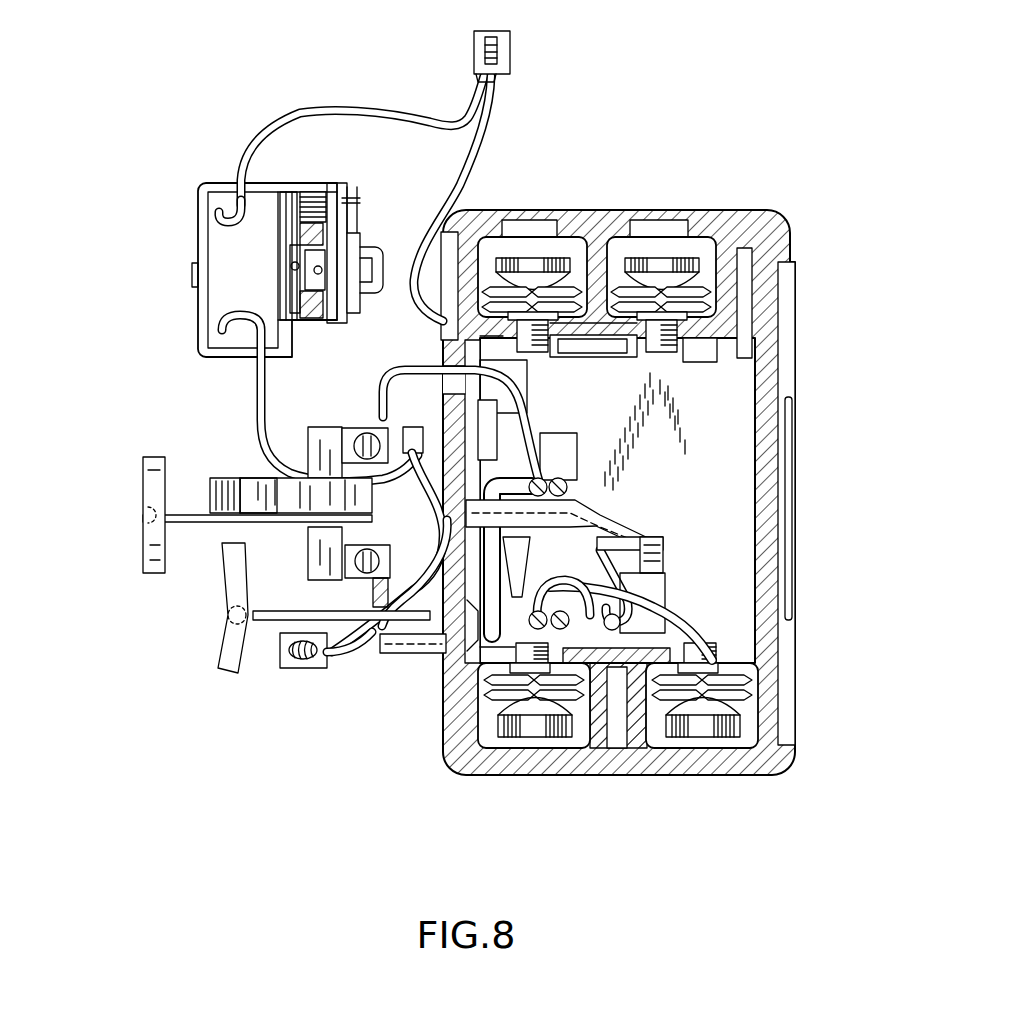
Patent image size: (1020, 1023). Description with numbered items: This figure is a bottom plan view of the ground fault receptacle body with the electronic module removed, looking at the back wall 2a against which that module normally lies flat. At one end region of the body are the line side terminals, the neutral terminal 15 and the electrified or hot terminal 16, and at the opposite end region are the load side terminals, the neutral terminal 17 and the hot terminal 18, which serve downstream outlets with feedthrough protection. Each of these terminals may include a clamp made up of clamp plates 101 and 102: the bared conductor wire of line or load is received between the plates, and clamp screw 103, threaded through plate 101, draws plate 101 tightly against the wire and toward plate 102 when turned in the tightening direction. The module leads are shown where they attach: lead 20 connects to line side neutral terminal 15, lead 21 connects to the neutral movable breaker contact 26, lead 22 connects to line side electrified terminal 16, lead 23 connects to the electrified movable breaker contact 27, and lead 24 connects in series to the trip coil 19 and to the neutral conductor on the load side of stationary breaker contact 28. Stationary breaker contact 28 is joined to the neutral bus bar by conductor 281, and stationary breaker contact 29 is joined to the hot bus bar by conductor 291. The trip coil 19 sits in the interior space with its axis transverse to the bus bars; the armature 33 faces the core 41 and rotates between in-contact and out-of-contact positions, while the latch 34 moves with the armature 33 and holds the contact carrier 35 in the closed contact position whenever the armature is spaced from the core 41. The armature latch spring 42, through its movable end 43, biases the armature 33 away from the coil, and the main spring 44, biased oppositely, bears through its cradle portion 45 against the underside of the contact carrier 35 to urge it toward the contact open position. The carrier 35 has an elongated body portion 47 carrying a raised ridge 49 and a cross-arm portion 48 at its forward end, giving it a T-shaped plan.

The back wall 2a is at (725, 465).
The line side neutral terminal 15 is at (516, 735).
The line side electrified terminal 16 is at (682, 735).
The load side neutral terminal 17 is at (533, 262).
The load side electrified terminal 18 is at (660, 262).
The trip coil 19 is at (196, 243).
The lead 20 is at (575, 598).
The lead 21 is at (380, 383).
The lead 22 is at (700, 620).
The lead 23 is at (517, 482).
The lead 24 is at (340, 110).
The neutral movable breaker contact 26 is at (356, 438).
The electrified movable breaker contact 27 is at (365, 567).
The stationary breaker contact 28 is at (474, 45).
The stationary breaker contact 29 is at (290, 668).
The armature 33 is at (364, 238).
The latch 34 is at (322, 274).
The contact carrier 35 is at (290, 487).
The core 41 is at (291, 264).
The armature latch spring 42 is at (312, 196).
The movable end 43 is at (356, 205).
The main spring 44 is at (313, 312).
The cradle portion 45 is at (381, 262).
The body portion 47 is at (262, 502).
The cross-arm portion 48 is at (322, 436).
The raised ridge 49 is at (237, 505).
The clamp plate 101 is at (712, 288).
The clamp plate 102 is at (722, 303).
The clamp screw 103 is at (550, 737).
The conductor 281 is at (489, 125).
The conductor 291 is at (356, 654).